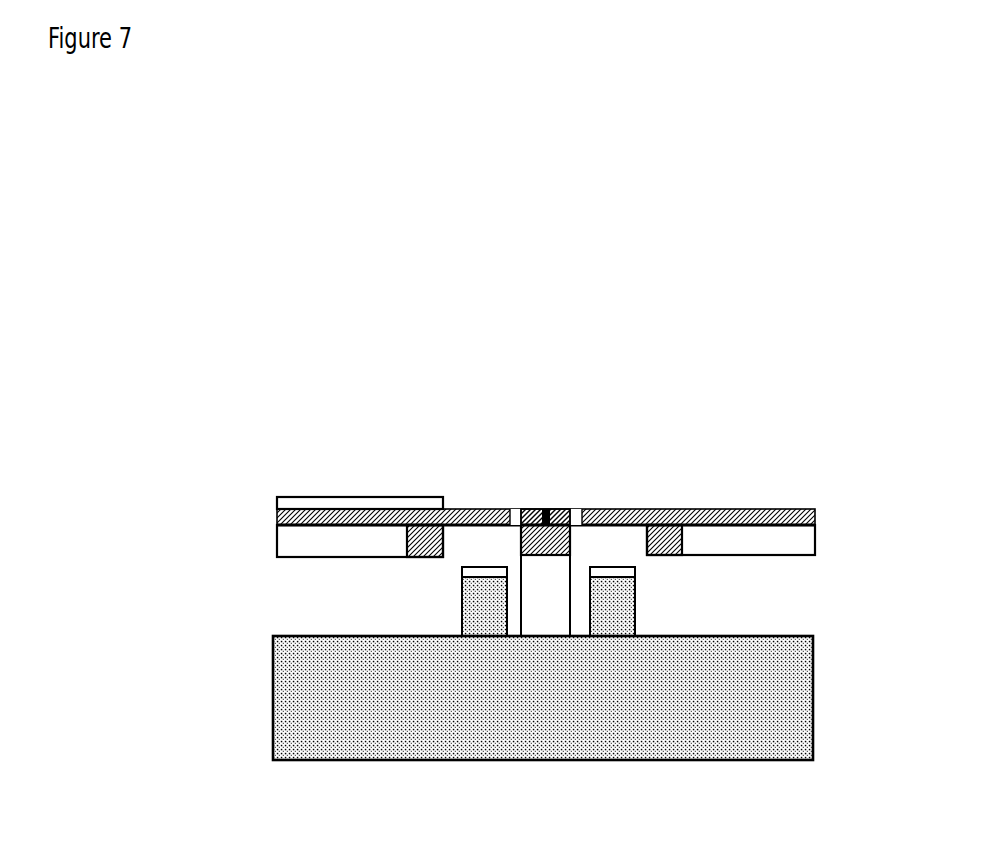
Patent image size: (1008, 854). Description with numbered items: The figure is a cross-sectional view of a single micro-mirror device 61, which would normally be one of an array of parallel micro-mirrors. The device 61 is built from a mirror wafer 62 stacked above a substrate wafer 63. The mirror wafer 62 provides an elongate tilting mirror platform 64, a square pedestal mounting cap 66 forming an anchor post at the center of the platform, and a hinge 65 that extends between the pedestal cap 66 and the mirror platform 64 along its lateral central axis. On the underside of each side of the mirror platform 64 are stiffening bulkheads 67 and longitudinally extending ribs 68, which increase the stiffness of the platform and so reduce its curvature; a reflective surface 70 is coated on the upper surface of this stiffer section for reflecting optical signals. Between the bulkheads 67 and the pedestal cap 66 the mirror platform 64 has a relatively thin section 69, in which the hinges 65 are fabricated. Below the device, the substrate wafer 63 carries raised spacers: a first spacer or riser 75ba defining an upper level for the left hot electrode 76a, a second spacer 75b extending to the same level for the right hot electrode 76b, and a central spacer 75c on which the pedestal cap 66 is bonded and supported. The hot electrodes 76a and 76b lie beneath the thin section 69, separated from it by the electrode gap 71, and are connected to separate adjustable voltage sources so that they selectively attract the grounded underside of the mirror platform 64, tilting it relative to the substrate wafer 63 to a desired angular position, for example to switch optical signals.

The mirror device 61 is at (517, 501).
The mirror wafer 62 is at (258, 514).
The substrate wafer 63 is at (258, 680).
The mirror platform 64 is at (815, 513).
The hinge 65 is at (547, 508).
The pedestal mounting cap 66 is at (559, 508).
The stiffening bulkhead 67 is at (418, 548).
The stiffening rib 68 is at (282, 542).
The thin section 69 is at (479, 507).
The reflective surface 70 is at (332, 497).
The electrode gap 71 is at (545, 587).
The support post 75ba is at (505, 617).
The second spacer 75b is at (627, 617).
The central spacer 75c is at (560, 595).
The left hot electrode 76a is at (462, 573).
The right hot electrode 76b is at (634, 576).